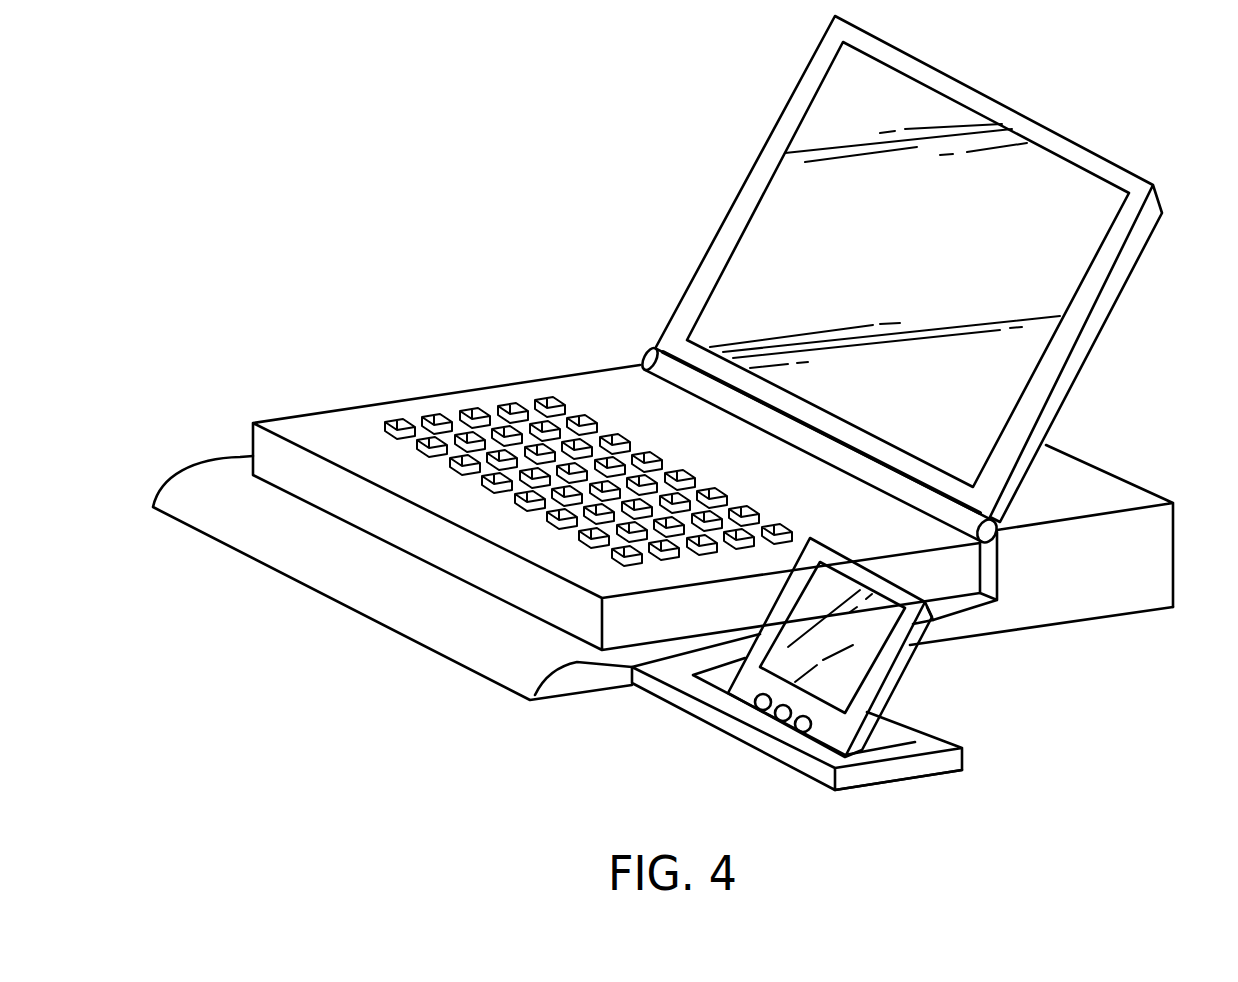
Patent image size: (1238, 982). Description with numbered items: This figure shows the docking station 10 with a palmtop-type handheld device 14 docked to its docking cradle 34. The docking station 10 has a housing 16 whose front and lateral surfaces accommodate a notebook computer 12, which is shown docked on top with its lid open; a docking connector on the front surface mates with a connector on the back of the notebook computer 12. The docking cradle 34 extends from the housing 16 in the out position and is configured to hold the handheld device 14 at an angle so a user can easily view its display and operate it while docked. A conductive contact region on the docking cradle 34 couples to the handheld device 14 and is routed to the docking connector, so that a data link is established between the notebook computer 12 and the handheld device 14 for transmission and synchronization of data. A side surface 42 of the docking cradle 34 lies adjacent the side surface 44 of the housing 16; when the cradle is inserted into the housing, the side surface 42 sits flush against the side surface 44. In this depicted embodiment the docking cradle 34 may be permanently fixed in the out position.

The docking station 10 is at (683, 421).
The notebook computer 12 is at (1150, 240).
The palmtop-type handheld device 14 is at (905, 676).
The housing 16 is at (683, 532).
The docking cradle 34 is at (820, 730).
The side surface of the docking cradle 42 is at (963, 762).
The side surface of the docking station housing 44 is at (1165, 567).